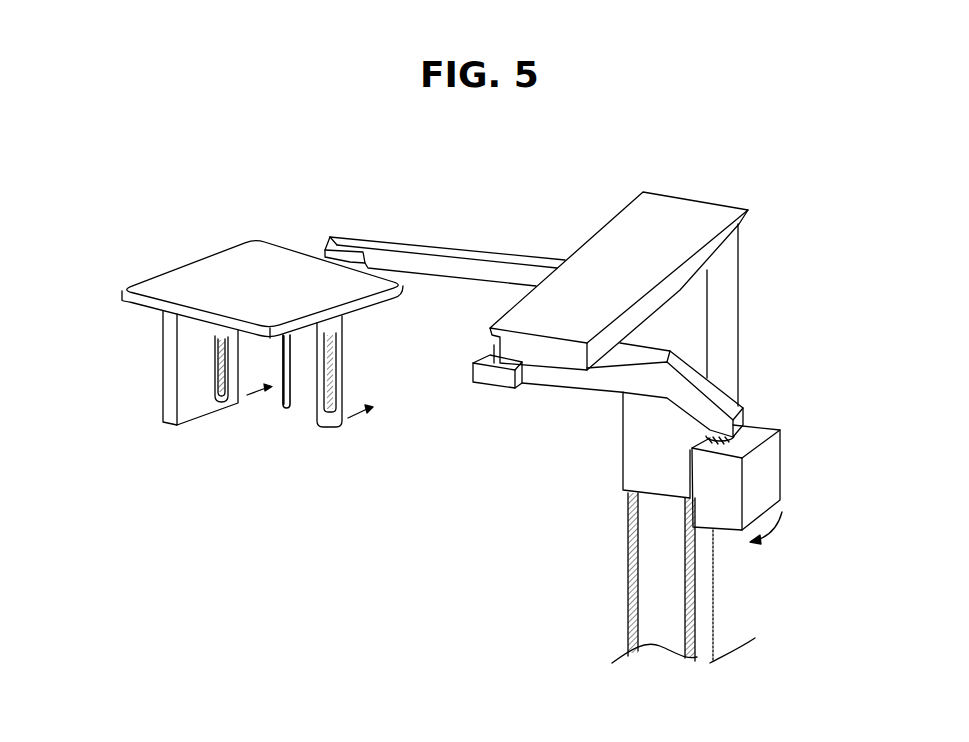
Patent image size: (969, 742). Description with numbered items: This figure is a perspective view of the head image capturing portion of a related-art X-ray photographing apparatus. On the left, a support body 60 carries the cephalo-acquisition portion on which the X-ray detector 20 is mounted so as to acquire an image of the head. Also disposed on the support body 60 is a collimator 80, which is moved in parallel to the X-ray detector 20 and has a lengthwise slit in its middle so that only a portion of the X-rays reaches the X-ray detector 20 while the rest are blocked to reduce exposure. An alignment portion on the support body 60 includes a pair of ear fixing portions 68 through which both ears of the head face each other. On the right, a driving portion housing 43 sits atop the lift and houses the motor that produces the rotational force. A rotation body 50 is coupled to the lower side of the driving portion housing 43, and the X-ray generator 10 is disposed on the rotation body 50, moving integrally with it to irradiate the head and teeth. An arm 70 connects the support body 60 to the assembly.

The X-ray generator 10 is at (758, 478).
The X-ray detector 20 is at (170, 411).
The driving portion housing 43 is at (496, 345).
The rotation body 50 is at (738, 386).
The support body 60 is at (183, 278).
The ear fixing portions 68 is at (215, 366).
The connecting arm 70 is at (453, 258).
The collimator 80 is at (318, 418).